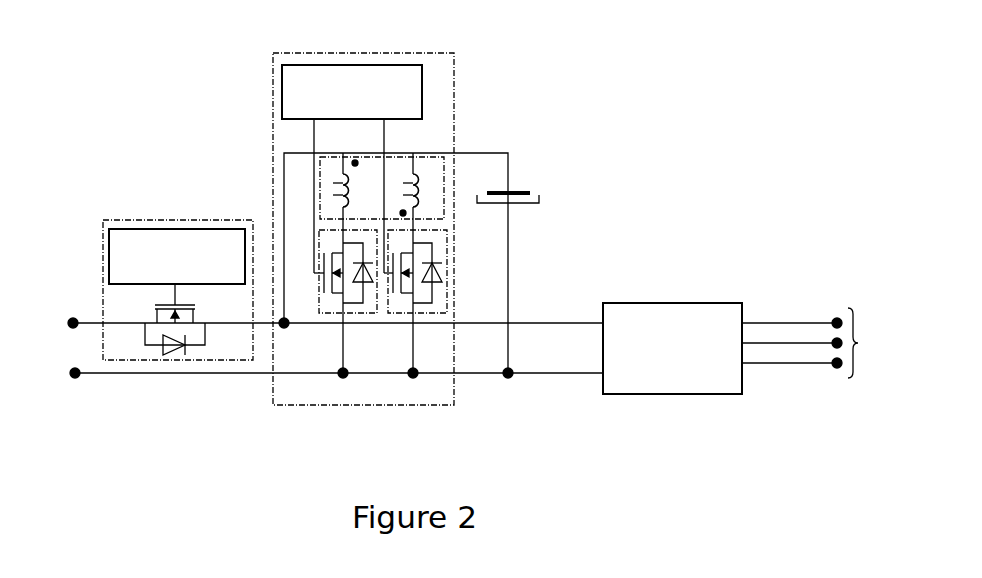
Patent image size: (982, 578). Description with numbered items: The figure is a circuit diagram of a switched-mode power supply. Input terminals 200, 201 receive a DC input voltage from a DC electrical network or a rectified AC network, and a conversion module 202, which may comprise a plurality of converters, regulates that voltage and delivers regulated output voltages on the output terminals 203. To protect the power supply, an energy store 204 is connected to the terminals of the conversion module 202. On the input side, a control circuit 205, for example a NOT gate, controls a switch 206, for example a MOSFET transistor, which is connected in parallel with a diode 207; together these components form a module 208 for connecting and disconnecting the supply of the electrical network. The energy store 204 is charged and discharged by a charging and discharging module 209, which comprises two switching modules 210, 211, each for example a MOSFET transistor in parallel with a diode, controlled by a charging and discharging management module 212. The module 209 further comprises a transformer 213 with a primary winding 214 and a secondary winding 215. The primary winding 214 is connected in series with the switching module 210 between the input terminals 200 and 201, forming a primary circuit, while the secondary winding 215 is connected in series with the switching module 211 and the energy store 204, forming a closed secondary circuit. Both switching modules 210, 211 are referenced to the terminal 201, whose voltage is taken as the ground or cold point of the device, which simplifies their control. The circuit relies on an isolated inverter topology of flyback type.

The input terminal 200 is at (70, 320).
The input terminal 201 is at (70, 370).
The conversion module 202 is at (670, 305).
The output terminals 203 is at (823, 343).
The energy store 204 is at (520, 192).
The control circuit 205 is at (140, 233).
The switch 206 is at (155, 315).
The diode 207 is at (160, 350).
The module for connecting and disconnecting 208 is at (212, 220).
The charging and discharging module 209 is at (273, 63).
The switching module 210 is at (330, 314).
The switching module 211 is at (447, 253).
The charging and discharging management module 212 is at (397, 63).
The transformer 213 is at (442, 180).
The primary winding 214 is at (333, 183).
The secondary winding 215 is at (407, 182).